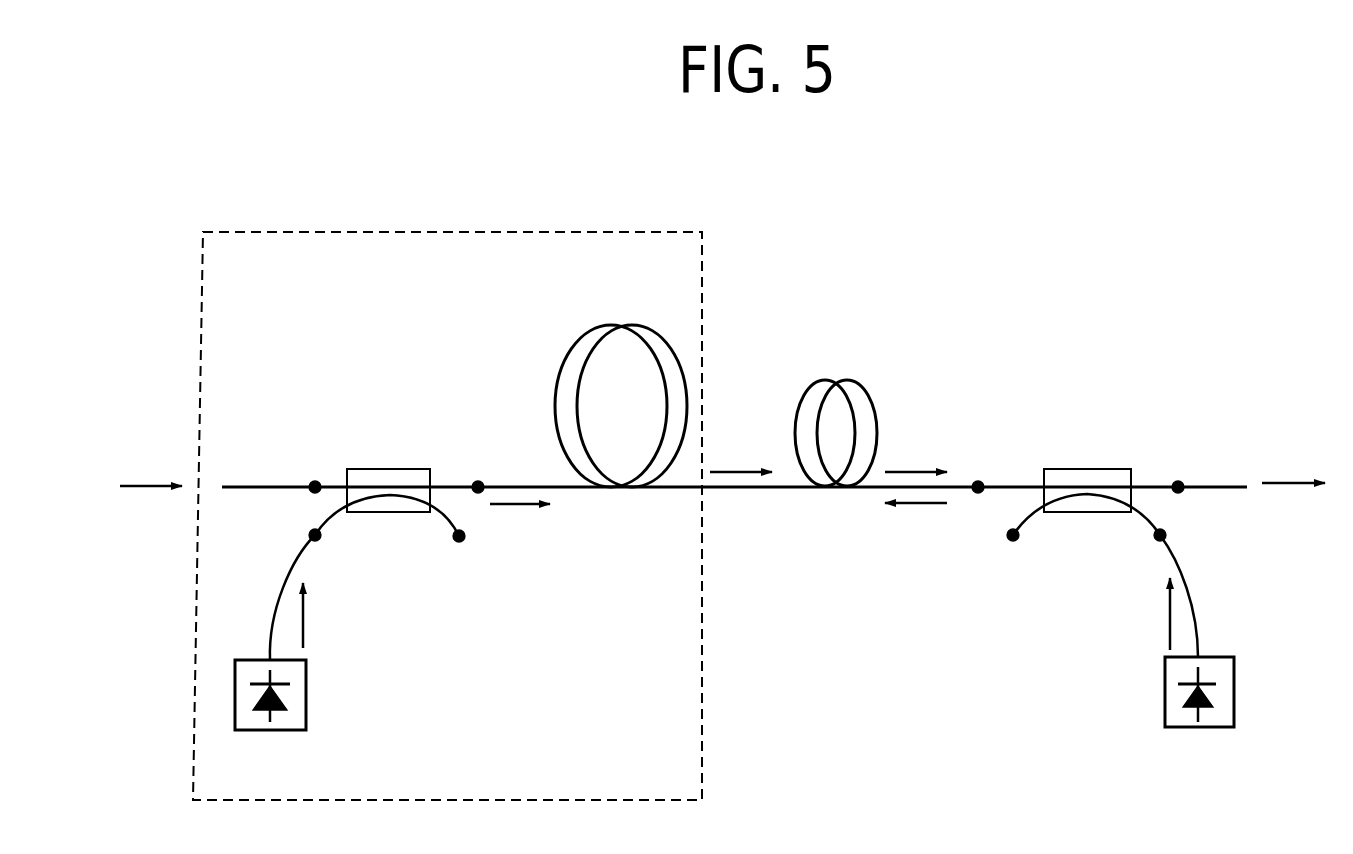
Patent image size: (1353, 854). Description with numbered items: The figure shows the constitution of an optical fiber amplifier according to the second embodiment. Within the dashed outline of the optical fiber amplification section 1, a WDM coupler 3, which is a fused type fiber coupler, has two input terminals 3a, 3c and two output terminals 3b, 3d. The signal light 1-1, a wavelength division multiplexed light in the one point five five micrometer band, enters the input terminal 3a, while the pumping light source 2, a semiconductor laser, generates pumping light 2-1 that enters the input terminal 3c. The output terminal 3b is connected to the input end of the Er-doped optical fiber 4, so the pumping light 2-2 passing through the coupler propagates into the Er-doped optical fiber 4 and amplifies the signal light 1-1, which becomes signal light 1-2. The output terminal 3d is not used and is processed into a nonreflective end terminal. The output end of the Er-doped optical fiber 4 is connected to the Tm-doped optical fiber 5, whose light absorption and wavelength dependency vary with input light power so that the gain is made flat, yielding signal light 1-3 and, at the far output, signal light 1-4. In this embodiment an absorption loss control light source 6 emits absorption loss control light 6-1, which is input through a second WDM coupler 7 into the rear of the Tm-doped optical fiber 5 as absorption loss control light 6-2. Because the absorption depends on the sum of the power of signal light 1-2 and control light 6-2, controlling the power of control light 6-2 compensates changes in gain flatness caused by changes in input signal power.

The optical fiber amplification section 1 is at (264, 232).
The pumping light source 2 is at (250, 731).
The WDM coupler 3 is at (405, 468).
The input terminal 3a is at (300, 462).
The output terminal 3b is at (462, 463).
The input terminal 3c is at (289, 540).
The output terminal 3d is at (459, 564).
The Er-doped optical fiber 4 is at (645, 322).
The Tm-doped optical fiber 5 is at (860, 380).
The absorption loss control light source 6 is at (1214, 727).
The WDM coupler 7 is at (1085, 468).
The signal light 1-1 is at (151, 457).
The signal light 1-2 is at (741, 445).
The signal light 1-3 is at (916, 444).
The output signal light 1-4 is at (1293, 456).
The pumping light 2-1 is at (334, 615).
The pumping light 2-2 is at (520, 533).
The absorption loss control light 6-1 is at (1136, 614).
The absorption loss control light 6-2 is at (916, 532).